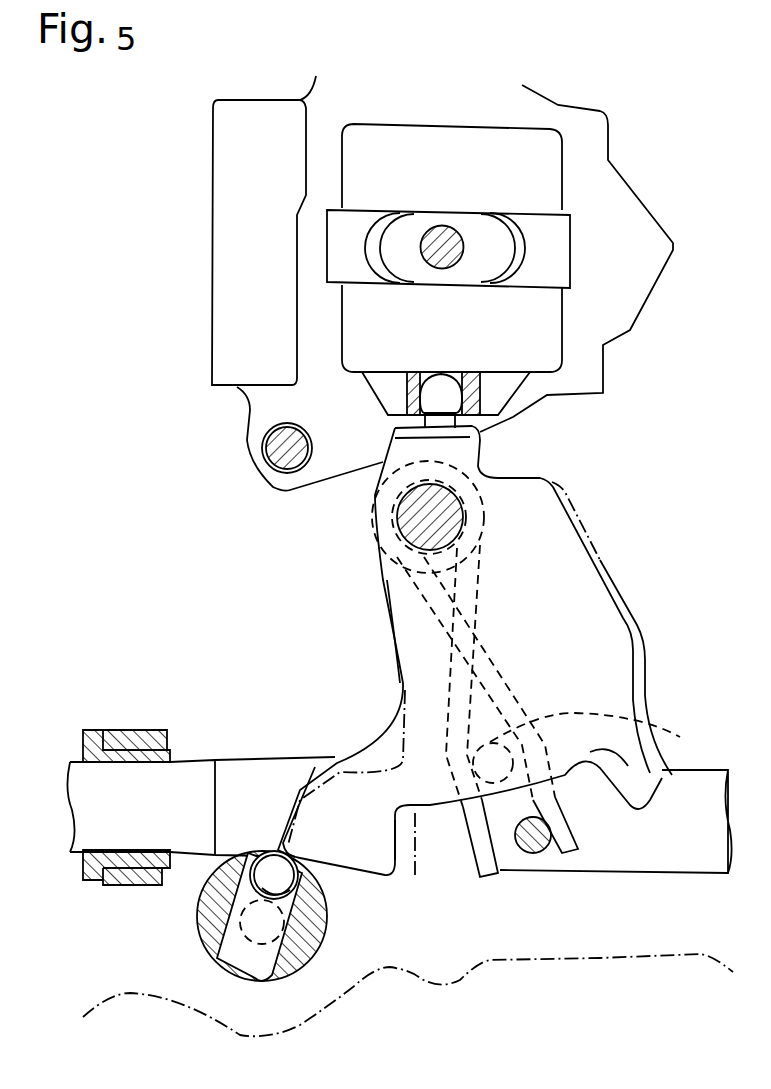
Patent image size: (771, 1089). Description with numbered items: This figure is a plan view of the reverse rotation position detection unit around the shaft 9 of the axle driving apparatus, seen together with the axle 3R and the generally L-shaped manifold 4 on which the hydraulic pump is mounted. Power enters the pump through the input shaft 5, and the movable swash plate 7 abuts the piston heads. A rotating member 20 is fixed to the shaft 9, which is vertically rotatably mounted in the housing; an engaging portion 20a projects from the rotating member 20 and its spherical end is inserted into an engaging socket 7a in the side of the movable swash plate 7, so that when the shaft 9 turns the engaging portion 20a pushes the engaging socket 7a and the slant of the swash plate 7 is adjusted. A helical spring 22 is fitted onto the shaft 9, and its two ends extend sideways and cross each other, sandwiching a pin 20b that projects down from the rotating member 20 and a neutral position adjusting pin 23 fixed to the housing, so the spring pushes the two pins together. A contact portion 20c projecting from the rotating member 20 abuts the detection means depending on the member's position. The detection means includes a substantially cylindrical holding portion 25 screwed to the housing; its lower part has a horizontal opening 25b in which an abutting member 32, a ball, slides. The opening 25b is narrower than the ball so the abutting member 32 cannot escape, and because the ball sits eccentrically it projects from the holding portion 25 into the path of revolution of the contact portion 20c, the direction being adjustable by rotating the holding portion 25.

The movable swash plate 7 is at (558, 175).
The engaging socket 7a is at (383, 390).
The input shaft 5 is at (458, 260).
The manifold 4 is at (250, 410).
The engaging portion 20a is at (455, 398).
The rotating member 20 is at (388, 615).
The shaft 9 is at (397, 533).
The helical spring 22 is at (450, 680).
The pin 20b is at (602, 736).
The axle 3R is at (665, 870).
The contact portion 20c is at (365, 853).
The neutral position adjusting pin 23 is at (548, 853).
The holding portion 25 is at (200, 938).
The abutting member 32 is at (275, 851).
The opening 25b is at (258, 980).